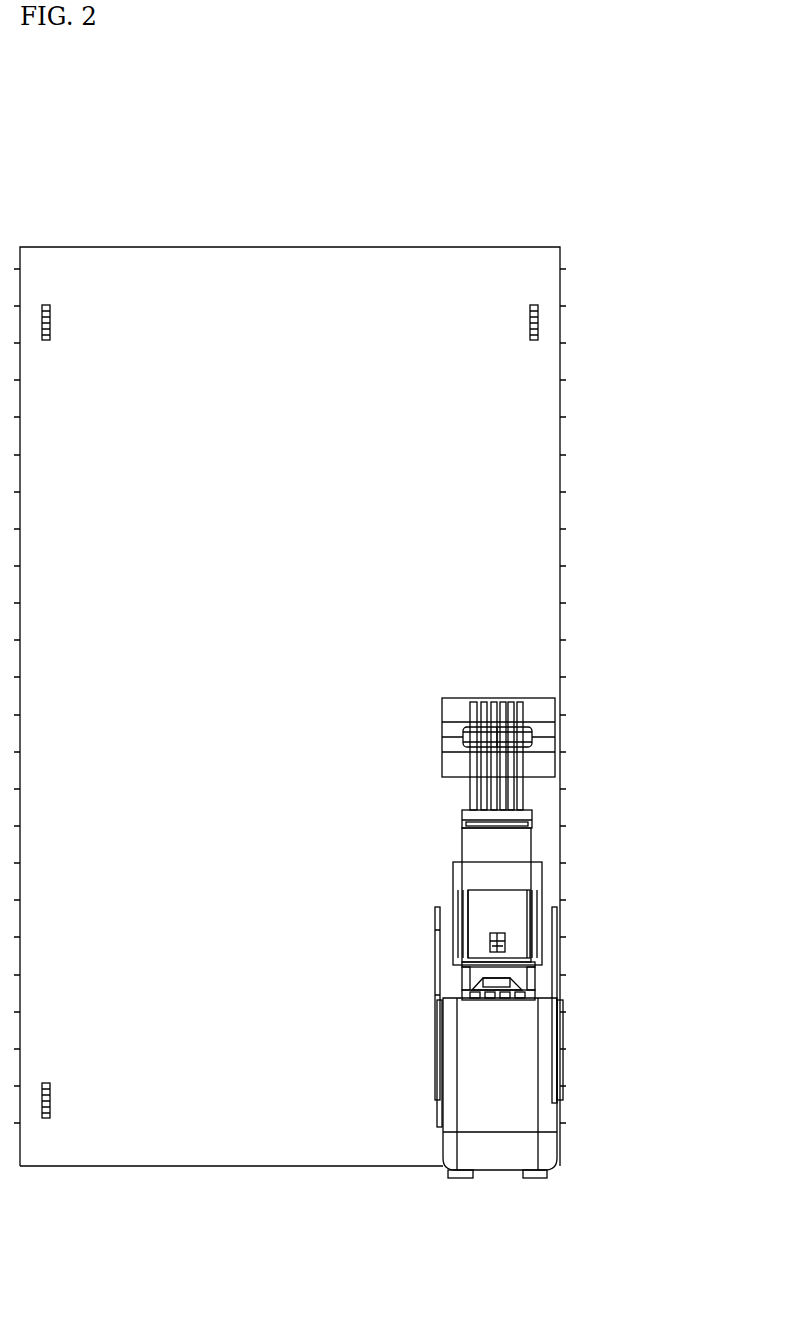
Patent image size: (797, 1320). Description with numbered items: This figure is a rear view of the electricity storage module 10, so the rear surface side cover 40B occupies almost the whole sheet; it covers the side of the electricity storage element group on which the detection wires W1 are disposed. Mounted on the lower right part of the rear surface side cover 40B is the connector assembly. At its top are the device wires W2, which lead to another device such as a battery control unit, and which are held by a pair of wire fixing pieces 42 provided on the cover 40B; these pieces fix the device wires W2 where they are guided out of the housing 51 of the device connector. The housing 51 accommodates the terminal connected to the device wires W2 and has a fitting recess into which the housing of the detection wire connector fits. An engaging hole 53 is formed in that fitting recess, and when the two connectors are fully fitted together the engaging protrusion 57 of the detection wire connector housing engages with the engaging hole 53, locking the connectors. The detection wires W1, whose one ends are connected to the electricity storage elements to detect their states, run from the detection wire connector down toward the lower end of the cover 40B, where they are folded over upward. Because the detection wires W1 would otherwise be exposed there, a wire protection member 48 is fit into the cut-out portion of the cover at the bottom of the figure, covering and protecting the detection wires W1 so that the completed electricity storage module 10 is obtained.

The electricity storage module 10 is at (323, 192).
The rear surface side cover 40B is at (452, 270).
The wire fixing pieces 42 is at (487, 735).
The device wires W2 is at (520, 790).
The housing 51 is at (513, 857).
The engaging protrusion 57 is at (500, 934).
The engaging hole 53 is at (506, 944).
The detection wires W1 is at (555, 998).
The wire protection member 48 is at (504, 1155).